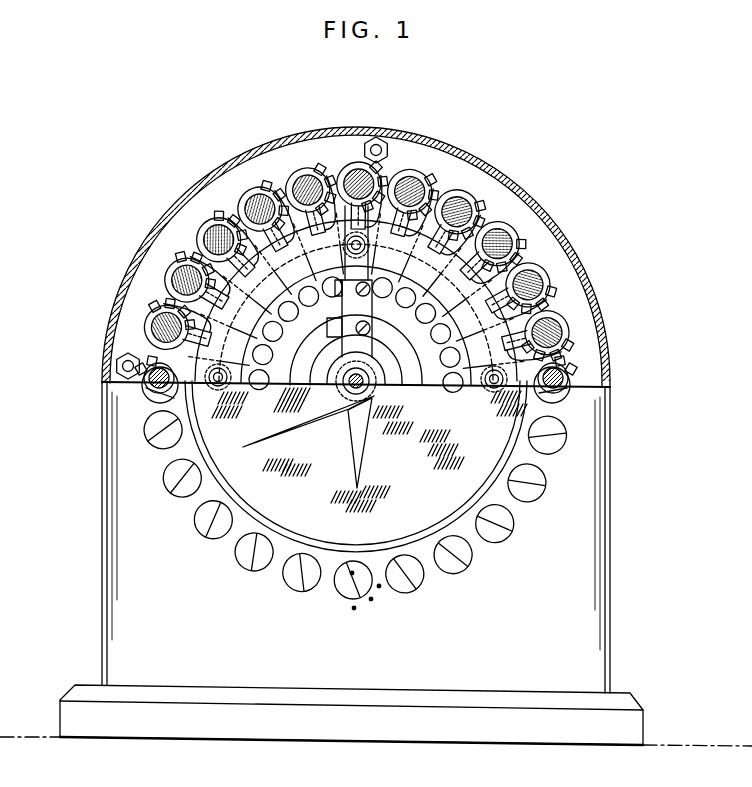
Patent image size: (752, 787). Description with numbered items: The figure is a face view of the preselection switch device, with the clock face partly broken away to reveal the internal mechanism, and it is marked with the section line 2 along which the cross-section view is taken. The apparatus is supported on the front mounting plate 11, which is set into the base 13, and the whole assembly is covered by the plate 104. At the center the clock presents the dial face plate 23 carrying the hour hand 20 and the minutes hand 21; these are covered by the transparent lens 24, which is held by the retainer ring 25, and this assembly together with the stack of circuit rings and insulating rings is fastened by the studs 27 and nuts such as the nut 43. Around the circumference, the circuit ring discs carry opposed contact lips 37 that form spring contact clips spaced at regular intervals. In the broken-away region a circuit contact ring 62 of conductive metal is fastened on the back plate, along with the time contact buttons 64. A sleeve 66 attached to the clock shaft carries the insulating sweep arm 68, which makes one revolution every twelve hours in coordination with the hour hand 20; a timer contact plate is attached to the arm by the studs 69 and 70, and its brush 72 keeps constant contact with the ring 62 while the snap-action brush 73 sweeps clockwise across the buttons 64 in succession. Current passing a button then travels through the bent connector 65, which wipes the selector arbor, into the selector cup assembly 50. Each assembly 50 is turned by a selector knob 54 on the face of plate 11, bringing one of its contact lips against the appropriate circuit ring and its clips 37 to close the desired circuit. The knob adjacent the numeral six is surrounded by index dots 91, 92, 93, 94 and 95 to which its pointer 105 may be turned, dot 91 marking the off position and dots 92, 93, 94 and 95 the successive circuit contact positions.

The section line 2 is at (410, 92).
The front mounting plate 11 is at (120, 641).
The base 13 is at (72, 710).
The hour hand 20 is at (361, 454).
The minutes hand 21 is at (298, 422).
The dial face plate 23 is at (243, 480).
The transparent lens 24 is at (352, 500).
The retainer ring 25 is at (201, 447).
The studs 27 is at (370, 246).
The contact lips 37 is at (212, 305).
The nut 43 is at (343, 246).
The selector cup assembly 50 is at (166, 257).
The selector knob 54 is at (219, 540).
The circuit contact ring 62 is at (428, 385).
The time contact buttons 64 is at (463, 386).
The connector 65 is at (238, 222).
The sleeve 66 is at (384, 386).
The sweep arm 68 is at (348, 317).
The stud 69 is at (349, 356).
The stud 70 is at (369, 294).
The brush 72 is at (327, 327).
The snap-action brush contact member 73 is at (341, 308).
The index dot 91 is at (351, 561).
The index dot 92 is at (352, 574).
The index dot 93 is at (379, 587).
The index dot 94 is at (371, 600).
The index dot 95 is at (354, 609).
The cover plate 104 is at (546, 208).
The pointer 105 is at (470, 570).